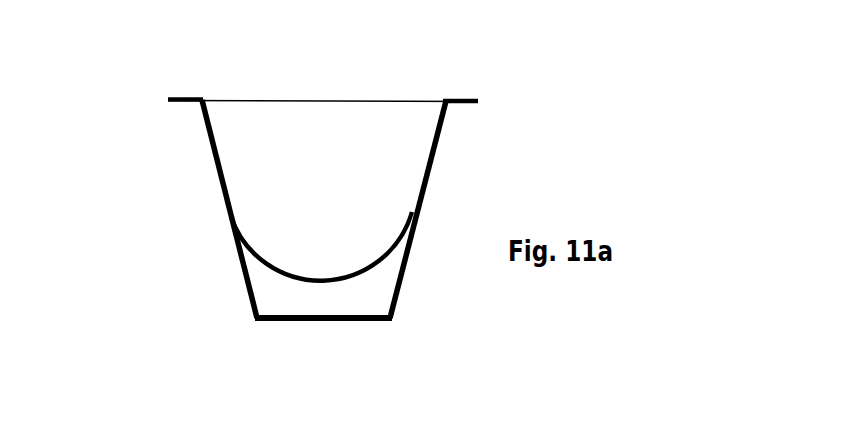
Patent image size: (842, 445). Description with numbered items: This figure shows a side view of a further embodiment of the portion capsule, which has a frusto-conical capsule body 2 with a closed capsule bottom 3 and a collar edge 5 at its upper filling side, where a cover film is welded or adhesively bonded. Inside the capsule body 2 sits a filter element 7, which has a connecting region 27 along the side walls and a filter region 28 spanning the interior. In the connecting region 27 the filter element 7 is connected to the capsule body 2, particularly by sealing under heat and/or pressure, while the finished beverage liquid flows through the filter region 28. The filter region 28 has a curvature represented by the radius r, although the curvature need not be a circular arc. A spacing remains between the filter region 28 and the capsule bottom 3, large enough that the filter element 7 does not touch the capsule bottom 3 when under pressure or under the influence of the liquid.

The collar edge 5 is at (462, 103).
The connecting region 27 is at (217, 172).
The capsule body 2 is at (400, 282).
The capsule bottom 3 is at (330, 320).
The filter region 28 is at (312, 283).
The filter element 7 is at (352, 200).
The radius r is at (272, 258).